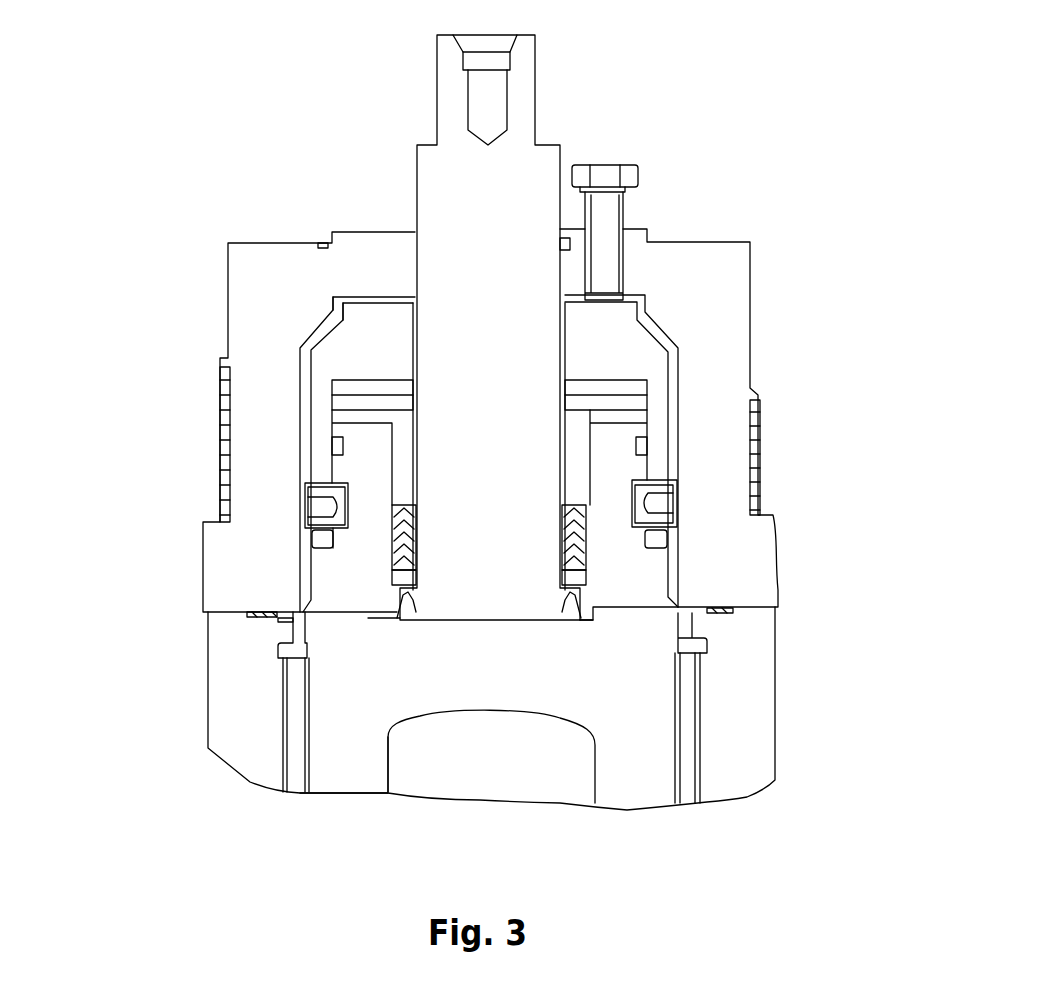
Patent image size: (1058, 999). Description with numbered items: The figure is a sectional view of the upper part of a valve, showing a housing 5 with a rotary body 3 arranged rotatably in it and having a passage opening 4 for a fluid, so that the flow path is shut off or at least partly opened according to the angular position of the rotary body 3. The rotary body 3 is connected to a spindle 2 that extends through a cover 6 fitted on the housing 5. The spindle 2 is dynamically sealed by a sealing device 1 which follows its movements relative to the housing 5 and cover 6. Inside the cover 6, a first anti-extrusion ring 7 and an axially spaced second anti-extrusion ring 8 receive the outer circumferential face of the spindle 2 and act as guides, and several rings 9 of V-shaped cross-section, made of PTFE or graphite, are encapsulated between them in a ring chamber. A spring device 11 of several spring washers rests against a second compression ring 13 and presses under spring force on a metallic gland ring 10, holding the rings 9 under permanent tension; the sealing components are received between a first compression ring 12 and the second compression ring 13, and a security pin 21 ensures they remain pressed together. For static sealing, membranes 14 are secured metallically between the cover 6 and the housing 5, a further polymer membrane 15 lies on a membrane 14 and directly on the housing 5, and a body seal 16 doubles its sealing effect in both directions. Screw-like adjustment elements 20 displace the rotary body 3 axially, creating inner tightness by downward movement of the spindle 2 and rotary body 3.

The sealing device 1 is at (686, 427).
The spindle 2 is at (465, 172).
The rotary body 3 is at (360, 737).
The passage opening 4 is at (500, 763).
The housing 5 is at (232, 727).
The cover 6 is at (333, 268).
The first anti-extrusion ring 7 is at (415, 568).
The second anti-extrusion ring 8 is at (408, 482).
The rings of V-shaped cross-section 9 is at (405, 510).
The gland ring 10 is at (405, 438).
The spring device 11 is at (357, 382).
The first compression ring 12 is at (335, 584).
The second compression ring 13 is at (380, 327).
The membrane 14 is at (357, 622).
The further membrane 15 is at (378, 613).
The body seal 16 is at (368, 616).
The adjustment element 20 is at (610, 200).
The security pin 21 is at (660, 500).